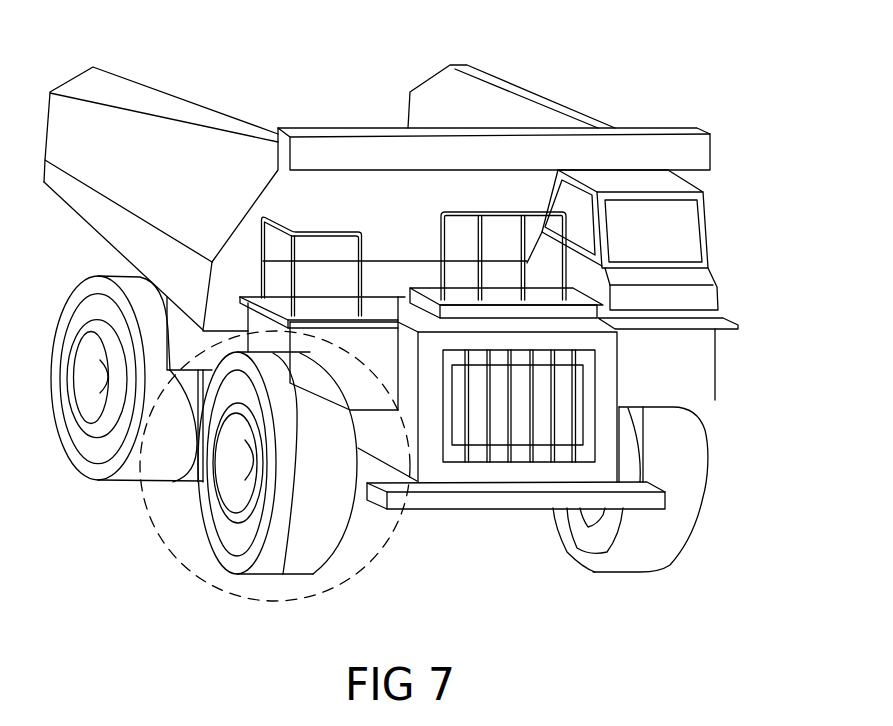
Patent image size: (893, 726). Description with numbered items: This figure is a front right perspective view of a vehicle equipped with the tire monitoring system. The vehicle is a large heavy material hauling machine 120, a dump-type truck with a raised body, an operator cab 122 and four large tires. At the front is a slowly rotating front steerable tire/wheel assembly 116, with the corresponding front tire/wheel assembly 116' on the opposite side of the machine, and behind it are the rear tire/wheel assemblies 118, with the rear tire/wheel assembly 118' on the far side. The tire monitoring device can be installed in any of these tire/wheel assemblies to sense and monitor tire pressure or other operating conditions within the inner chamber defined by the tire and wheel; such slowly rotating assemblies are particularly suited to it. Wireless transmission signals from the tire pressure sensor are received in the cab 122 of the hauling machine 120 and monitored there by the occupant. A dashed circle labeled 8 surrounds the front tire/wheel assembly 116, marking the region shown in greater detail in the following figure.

The hauling machine 120 is at (554, 74).
The cab 122 is at (671, 234).
The front steerable tire/wheel assembly 116 is at (232, 463).
The front right tire 116' is at (664, 489).
The rear tire/wheel assembly 118 is at (120, 397).
The rear right tire 118' is at (147, 450).
The detail region of FIG. 8 is at (168, 576).